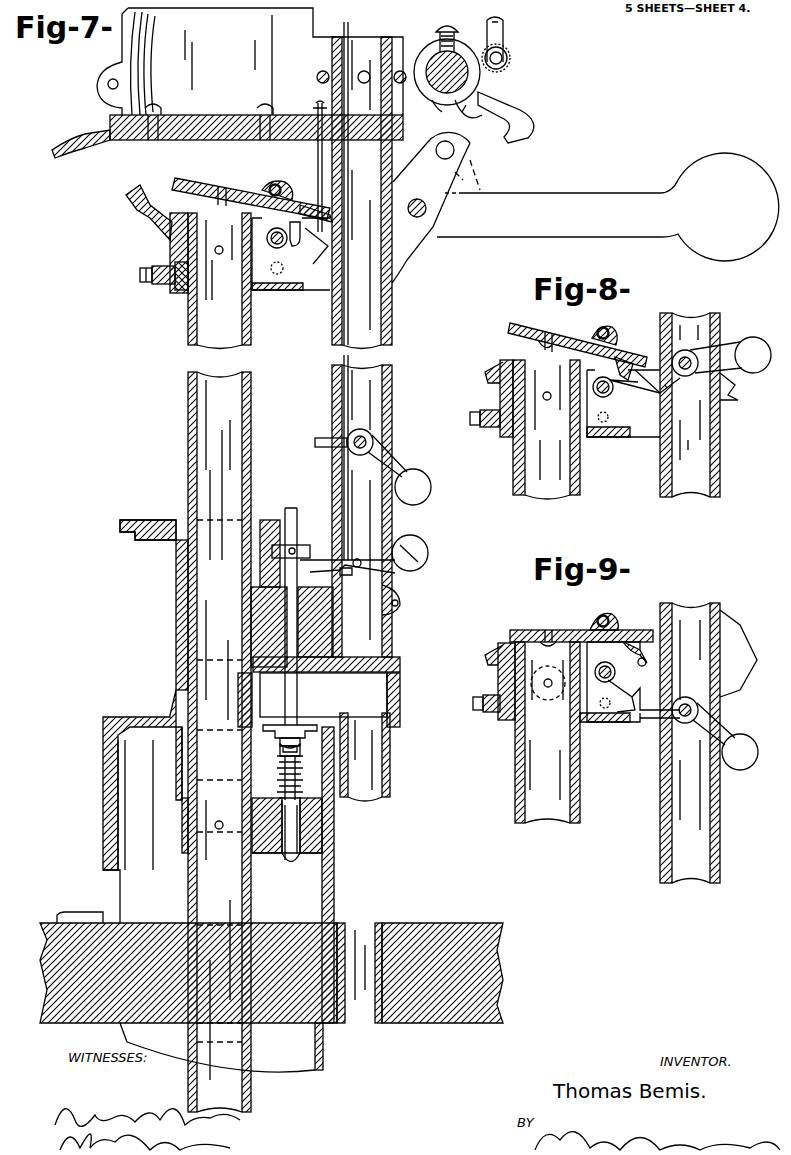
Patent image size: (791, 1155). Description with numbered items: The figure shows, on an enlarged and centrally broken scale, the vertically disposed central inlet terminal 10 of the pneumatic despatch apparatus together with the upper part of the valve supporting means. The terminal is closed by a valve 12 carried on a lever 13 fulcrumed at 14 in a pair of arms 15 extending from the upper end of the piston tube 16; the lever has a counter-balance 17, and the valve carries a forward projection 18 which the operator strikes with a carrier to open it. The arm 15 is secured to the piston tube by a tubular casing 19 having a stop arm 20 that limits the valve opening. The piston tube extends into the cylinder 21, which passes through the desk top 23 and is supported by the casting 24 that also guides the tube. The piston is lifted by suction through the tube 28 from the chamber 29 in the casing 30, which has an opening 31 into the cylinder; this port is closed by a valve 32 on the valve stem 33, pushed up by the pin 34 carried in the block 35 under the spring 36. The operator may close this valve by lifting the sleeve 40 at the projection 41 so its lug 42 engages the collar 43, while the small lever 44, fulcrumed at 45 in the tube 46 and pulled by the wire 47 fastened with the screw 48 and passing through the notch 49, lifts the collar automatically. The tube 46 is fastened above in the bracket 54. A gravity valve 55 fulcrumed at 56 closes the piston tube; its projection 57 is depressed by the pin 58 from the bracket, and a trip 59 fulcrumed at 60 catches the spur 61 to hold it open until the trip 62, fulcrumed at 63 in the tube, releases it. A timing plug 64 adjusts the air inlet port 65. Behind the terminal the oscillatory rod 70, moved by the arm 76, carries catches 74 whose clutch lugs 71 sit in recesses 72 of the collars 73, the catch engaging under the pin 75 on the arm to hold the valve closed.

In FIG. 7, the central inlet terminal 10 is at (250, 61).
In FIG. 7, the valve 12 is at (186, 140).
In FIG. 7, the lever 13 is at (398, 177).
In FIG. 7, the fulcrum 14 is at (427, 210).
In FIG. 7, the arms 15 is at (452, 175).
In FIG. 7, the piston tube 16 is at (251, 325).
In FIG. 8, the piston tube 16 is at (585, 471).
In FIG. 9, the piston tube 16 is at (515, 767).
In FIG. 7, the counter-balance 17 is at (608, 207).
In FIG. 7, the projection 18 is at (63, 156).
In FIG. 7, the tubular casing 19 is at (170, 244).
In FIG. 8, the tubular casing 19 is at (500, 391).
In FIG. 9, the tubular casing 19 is at (498, 674).
In FIG. 7, the stop arm 20 is at (126, 200).
In FIG. 7, the cylinder 21 is at (323, 1053).
In FIG. 7, the table or desk top 23 is at (445, 923).
In FIG. 7, the casting 24 is at (334, 863).
In FIG. 7, the tube 28 is at (372, 790).
In FIG. 7, the chamber 29 is at (375, 697).
In FIG. 7, the casing 30 is at (400, 662).
In FIG. 7, the opening 31 is at (305, 725).
In FIG. 7, the valve 32 is at (283, 752).
In FIG. 7, the valve rod or stem 33 is at (297, 520).
In FIG. 7, the pin 34 is at (288, 855).
In FIG. 7, the block 35 is at (277, 778).
In FIG. 7, the spring 36 is at (300, 770).
In FIG. 7, the sleeve 40 is at (176, 608).
In FIG. 7, the projection 41 is at (124, 540).
In FIG. 7, the lug 42 is at (266, 520).
In FIG. 7, the collar 43 is at (305, 548).
In FIG. 7, the small lever 44 is at (410, 580).
In FIG. 7, the fulcrum 45 is at (358, 558).
In FIG. 7, the tube 46 is at (392, 302).
In FIG. 8, the tube 46 is at (720, 452).
In FIG. 9, the tube 46 is at (720, 608).
In FIG. 7, the flexible wire 47 is at (360, 18).
In FIG. 7, the screw 48 is at (428, 560).
In FIG. 7, the notch 49 is at (350, 580).
In FIG. 7, the bracket 54 is at (408, 48).
In FIG. 7, the valve 55 is at (222, 186).
In FIG. 8, the valve 55 is at (544, 332).
In FIG. 9, the valve 55 is at (545, 630).
In FIG. 7, the fulcrum 56 is at (274, 180).
In FIG. 8, the fulcrum 56 is at (600, 328).
In FIG. 9, the fulcrum 56 is at (603, 614).
In FIG. 7, the projection 57 is at (328, 208).
In FIG. 8, the projection 57 is at (636, 356).
In FIG. 9, the projection 57 is at (647, 628).
In FIG. 7, the pin 58 is at (318, 170).
In FIG. 7, the trip 59 is at (314, 250).
In FIG. 8, the trip 59 is at (640, 385).
In FIG. 9, the trip 59 is at (637, 722).
In FIG. 7, the fulcrum 60 is at (285, 244).
In FIG. 8, the fulcrum 60 is at (608, 396).
In FIG. 9, the fulcrum 60 is at (606, 662).
In FIG. 7, the spur 61 is at (290, 228).
In FIG. 7, the trip 62 is at (322, 448).
In FIG. 8, the trip 62 is at (672, 388).
In FIG. 9, the trip 62 is at (655, 714).
In FIG. 7, the fulcrum 63 is at (366, 437).
In FIG. 8, the fulcrum 63 is at (690, 355).
In FIG. 9, the fulcrum 63 is at (698, 708).
In FIG. 7, the timing plug 64 is at (158, 284).
In FIG. 8, the timing plug 64 is at (489, 427).
In FIG. 9, the timing plug 64 is at (488, 712).
In FIG. 7, the air inlet port 65 is at (182, 290).
In FIG. 7, the oscillatory rod 70 is at (450, 60).
In FIG. 7, the clutch lug 71 is at (466, 110).
In FIG. 7, the recess 72 is at (436, 112).
In FIG. 7, the collar 73 is at (480, 115).
In FIG. 7, the catch 74 is at (512, 100).
In FIG. 7, the pin 75 is at (453, 155).
In FIG. 7, the arm 76 is at (496, 44).